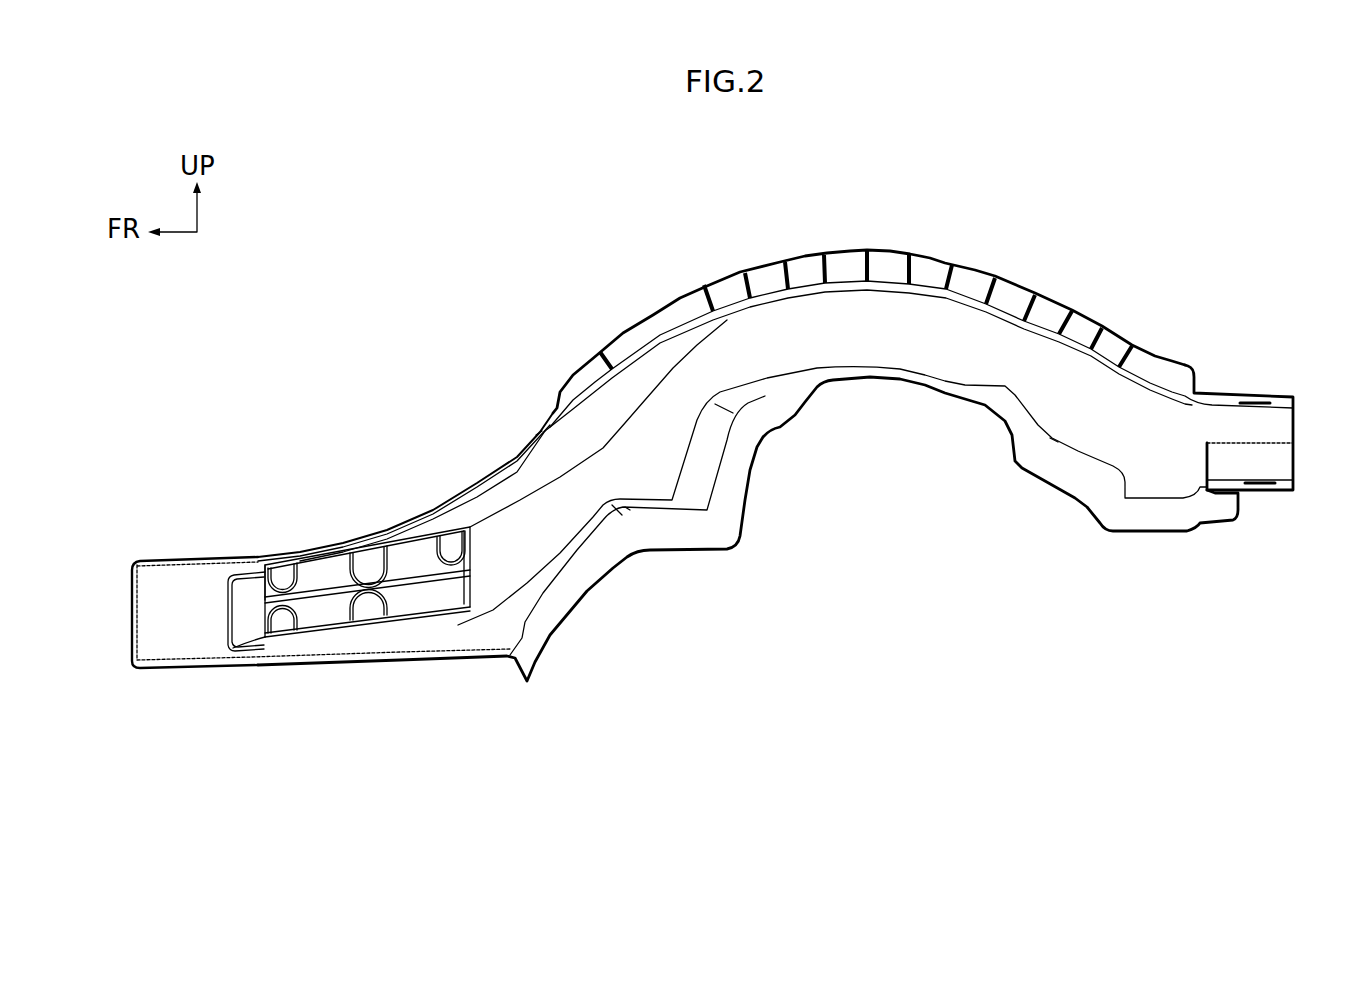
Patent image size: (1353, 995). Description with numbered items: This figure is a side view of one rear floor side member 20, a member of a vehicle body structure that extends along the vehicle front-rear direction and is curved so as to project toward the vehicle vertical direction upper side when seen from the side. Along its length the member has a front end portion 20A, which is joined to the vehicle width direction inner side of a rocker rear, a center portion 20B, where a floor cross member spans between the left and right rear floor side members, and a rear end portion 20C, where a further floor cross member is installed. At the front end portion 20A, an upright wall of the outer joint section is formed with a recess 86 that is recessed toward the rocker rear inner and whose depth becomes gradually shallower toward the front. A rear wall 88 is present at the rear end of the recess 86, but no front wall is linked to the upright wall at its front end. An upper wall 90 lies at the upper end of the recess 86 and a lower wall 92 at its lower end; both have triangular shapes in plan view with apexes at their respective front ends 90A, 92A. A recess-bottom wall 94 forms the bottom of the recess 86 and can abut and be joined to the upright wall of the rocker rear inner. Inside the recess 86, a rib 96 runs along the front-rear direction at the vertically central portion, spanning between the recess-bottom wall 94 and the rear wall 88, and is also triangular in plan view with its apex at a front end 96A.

The rear floor side member 20 is at (927, 223).
The front end portion 20A is at (367, 540).
The center portion 20B is at (805, 308).
The rear end portion 20C is at (1158, 424).
The recess 86 is at (448, 612).
The rear wall 88 is at (470, 577).
The upper wall 90 is at (417, 541).
The front end of upper wall 90A is at (265, 566).
The lower wall 92 is at (392, 624).
The front end of lower wall 92A is at (258, 641).
The recess-bottom wall 94 is at (331, 613).
The rib 96 is at (417, 594).
The front end of rib 96A is at (272, 598).